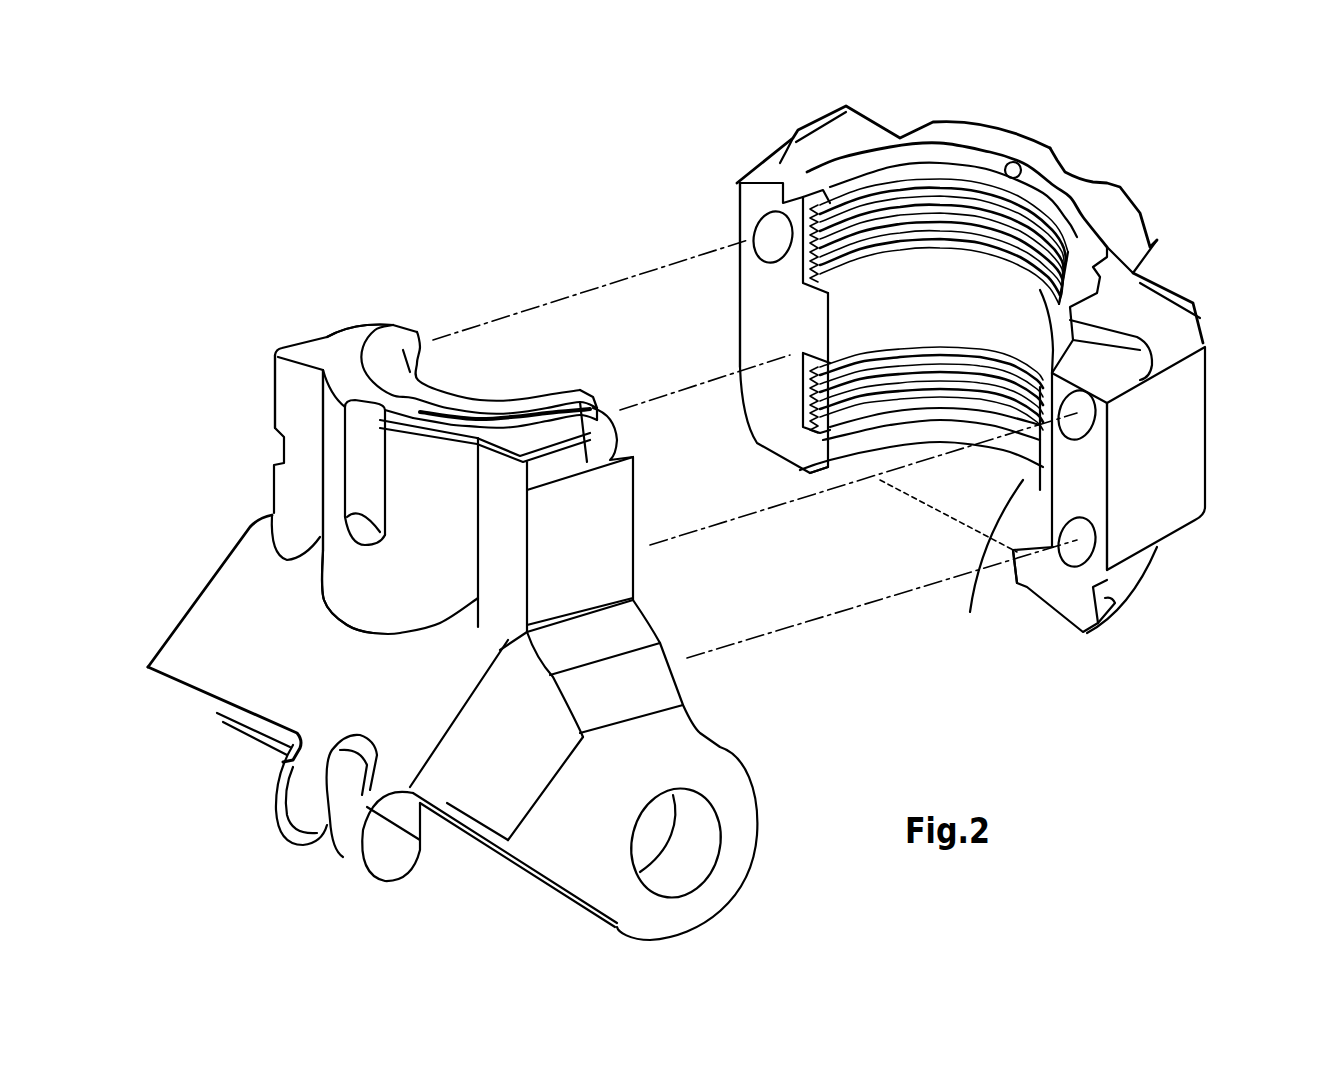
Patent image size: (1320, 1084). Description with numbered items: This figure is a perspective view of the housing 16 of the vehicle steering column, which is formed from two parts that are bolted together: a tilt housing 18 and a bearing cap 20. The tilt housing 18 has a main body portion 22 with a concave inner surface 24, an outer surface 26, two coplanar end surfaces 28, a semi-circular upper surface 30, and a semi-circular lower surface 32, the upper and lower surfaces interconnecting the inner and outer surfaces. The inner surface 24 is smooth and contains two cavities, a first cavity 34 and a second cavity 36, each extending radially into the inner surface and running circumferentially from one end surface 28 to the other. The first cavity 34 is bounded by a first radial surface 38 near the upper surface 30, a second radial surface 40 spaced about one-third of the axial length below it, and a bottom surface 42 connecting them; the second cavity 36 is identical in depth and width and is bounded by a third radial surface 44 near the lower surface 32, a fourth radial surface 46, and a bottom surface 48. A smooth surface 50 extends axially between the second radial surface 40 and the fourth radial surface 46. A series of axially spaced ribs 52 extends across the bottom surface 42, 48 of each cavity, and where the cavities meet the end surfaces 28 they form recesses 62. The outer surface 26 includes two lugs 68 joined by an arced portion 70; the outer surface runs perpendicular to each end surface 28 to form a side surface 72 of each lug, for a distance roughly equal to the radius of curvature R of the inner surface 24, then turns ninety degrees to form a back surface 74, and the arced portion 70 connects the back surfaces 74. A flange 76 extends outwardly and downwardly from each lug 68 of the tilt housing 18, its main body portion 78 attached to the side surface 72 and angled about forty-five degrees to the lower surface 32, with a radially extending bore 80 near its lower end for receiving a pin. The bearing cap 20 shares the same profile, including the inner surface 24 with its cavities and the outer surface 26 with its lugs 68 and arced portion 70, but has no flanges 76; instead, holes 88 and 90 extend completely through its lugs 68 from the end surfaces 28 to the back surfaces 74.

The housing 16 is at (548, 172).
The tilt housing 18 is at (297, 335).
The bearing cap 20 is at (1010, 125).
The main body portion 22 is at (428, 480).
The inner surface 24 is at (412, 372).
The outer surface 26 is at (332, 430).
The end surfaces 28 is at (783, 312).
The upper surface 30 is at (357, 343).
The lower surface 32 is at (970, 612).
The first cavity 34 is at (803, 218).
The second cavity 36 is at (800, 433).
The first radial surface 38 is at (780, 183).
The second radial surface 40 is at (805, 294).
The bottom surface 42 is at (897, 223).
The third radial surface 44 is at (830, 433).
The fourth radial surface 46 is at (807, 358).
The bottom surface 48 is at (847, 417).
The smooth surface 50 is at (923, 322).
The ribs 52 is at (800, 232).
The recesses 62 is at (790, 268).
The lugs 68 is at (340, 337).
The arced portion 70 is at (370, 557).
The side surface 72 is at (555, 543).
The back surface 74 is at (303, 477).
The flange 76 is at (720, 742).
The main body portion 78 is at (566, 812).
The bore 80 is at (688, 840).
The hole 88 is at (1085, 420).
The hole 90 is at (1087, 547).
The radius of curvature R is at (1003, 455).